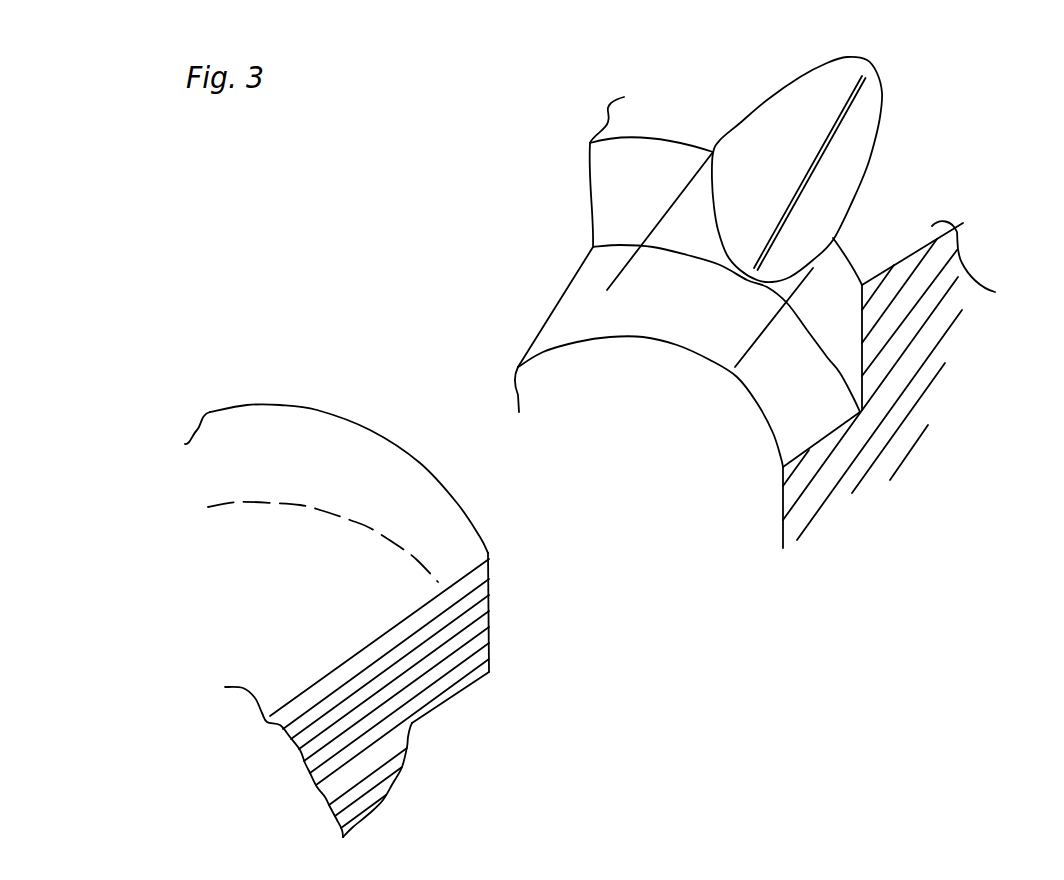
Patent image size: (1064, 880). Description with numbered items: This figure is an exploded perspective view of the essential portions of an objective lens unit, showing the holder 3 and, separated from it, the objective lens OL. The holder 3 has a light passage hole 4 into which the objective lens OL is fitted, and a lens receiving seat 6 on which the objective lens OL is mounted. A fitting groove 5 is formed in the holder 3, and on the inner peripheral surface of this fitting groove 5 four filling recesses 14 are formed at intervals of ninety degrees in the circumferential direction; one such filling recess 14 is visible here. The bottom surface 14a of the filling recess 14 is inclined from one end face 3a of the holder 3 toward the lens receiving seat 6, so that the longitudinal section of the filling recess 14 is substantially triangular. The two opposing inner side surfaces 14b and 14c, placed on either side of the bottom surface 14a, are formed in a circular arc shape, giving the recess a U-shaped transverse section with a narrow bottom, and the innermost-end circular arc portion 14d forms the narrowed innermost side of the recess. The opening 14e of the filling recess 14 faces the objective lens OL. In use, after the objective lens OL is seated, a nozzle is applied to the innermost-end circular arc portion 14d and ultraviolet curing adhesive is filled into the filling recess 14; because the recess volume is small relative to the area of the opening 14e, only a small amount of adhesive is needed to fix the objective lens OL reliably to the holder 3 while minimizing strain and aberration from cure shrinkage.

The holder 3 is at (907, 338).
The end face of holder 3a is at (929, 315).
The light passage hole 4 is at (541, 386).
The fitting groove 5 is at (612, 195).
The lens receiving seat 6 is at (585, 297).
The filling recess 14 is at (768, 90).
The bottom surface 14a is at (812, 185).
The inner side surface 14b is at (760, 157).
The inner side surface 14c is at (852, 147).
The innermost-end circular arc portion 14d is at (866, 63).
The opening 14e is at (740, 353).
The objective lens OL is at (305, 432).